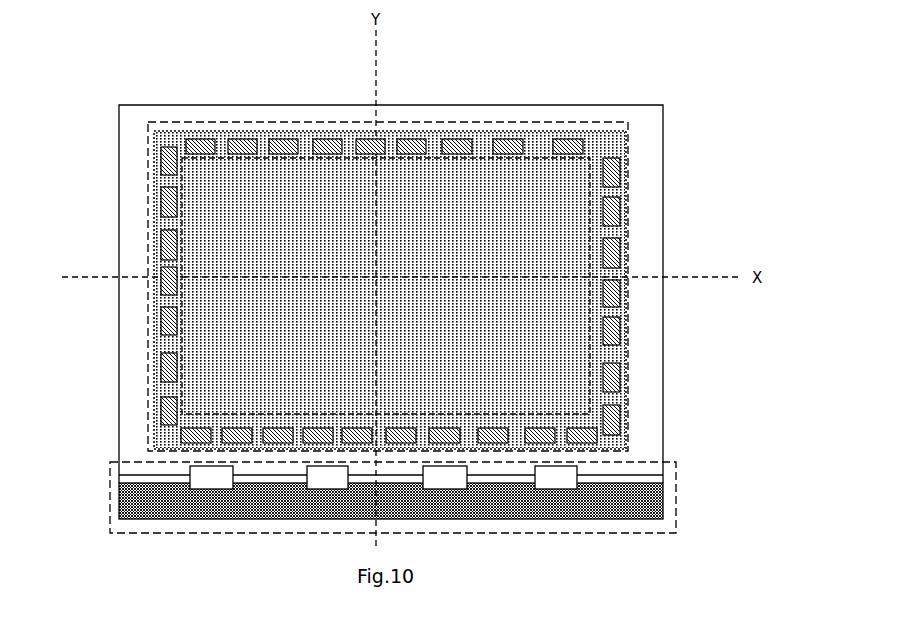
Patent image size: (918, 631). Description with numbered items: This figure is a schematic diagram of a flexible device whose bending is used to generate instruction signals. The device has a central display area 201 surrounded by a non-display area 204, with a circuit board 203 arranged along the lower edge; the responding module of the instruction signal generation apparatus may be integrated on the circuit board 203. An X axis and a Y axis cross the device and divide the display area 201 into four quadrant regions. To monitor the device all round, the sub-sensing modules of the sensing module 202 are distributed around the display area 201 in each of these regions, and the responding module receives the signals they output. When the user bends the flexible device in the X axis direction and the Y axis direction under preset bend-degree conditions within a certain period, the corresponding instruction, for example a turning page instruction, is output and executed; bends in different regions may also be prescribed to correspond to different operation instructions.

The display area 201 is at (578, 248).
The sensing module 202 is at (148, 232).
The circuit board 203 is at (672, 501).
The non-display area 204 is at (633, 152).